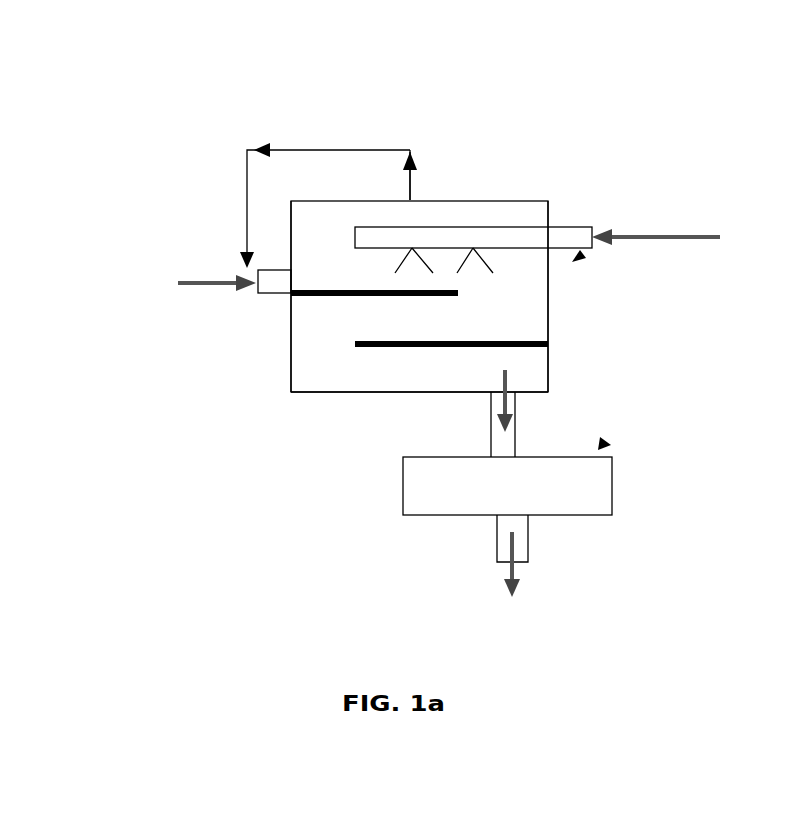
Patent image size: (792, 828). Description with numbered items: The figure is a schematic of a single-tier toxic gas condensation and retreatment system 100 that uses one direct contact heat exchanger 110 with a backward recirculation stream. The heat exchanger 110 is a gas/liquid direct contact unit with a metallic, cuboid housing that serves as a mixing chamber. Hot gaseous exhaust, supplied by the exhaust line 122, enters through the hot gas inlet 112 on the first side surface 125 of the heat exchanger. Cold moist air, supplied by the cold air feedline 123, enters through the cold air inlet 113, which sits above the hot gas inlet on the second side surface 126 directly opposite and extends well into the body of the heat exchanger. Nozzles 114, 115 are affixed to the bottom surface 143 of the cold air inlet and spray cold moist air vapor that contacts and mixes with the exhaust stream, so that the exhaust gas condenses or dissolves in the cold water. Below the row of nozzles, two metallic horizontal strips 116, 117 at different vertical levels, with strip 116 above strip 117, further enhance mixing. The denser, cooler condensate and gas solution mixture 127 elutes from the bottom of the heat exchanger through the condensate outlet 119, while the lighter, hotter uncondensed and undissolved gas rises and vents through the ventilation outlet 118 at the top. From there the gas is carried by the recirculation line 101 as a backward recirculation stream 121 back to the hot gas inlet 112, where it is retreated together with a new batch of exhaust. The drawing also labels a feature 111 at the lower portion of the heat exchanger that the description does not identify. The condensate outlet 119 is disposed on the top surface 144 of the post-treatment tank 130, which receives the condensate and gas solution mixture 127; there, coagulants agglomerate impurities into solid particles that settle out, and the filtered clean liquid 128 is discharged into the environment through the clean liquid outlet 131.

The single-tier toxic gas condensation and retreatment system 100 is at (562, 130).
The recirculation line 101 is at (410, 182).
The direct contact heat exchanger 110 is at (548, 330).
The vessel bottom wall 111 is at (312, 393).
The hot gas inlet 112 is at (275, 291).
The cold air inlet 113 is at (565, 233).
The nozzle 114 is at (400, 258).
The nozzle 115 is at (493, 263).
The horizontal strip 116 is at (335, 296).
The horizontal strip 117 is at (478, 342).
The ventilation outlet 118 is at (412, 195).
The condensate outlet 119 is at (508, 440).
The backward recirculation stream 121 is at (357, 150).
The exhaust line 122 is at (222, 291).
The cold air feedline 123 is at (660, 237).
The first side surface of the heat exchanger 125 is at (284, 370).
The second side surface 126 is at (556, 375).
The condensate and gas solution mixture 127 is at (500, 378).
The clean liquid 128 is at (500, 567).
The post-treatment tank 130 is at (600, 485).
The clean liquid outlet 131 is at (520, 540).
The bottom surface of the cold air inlet 143 is at (583, 256).
The top surface of post-treatment tank 144 is at (602, 446).